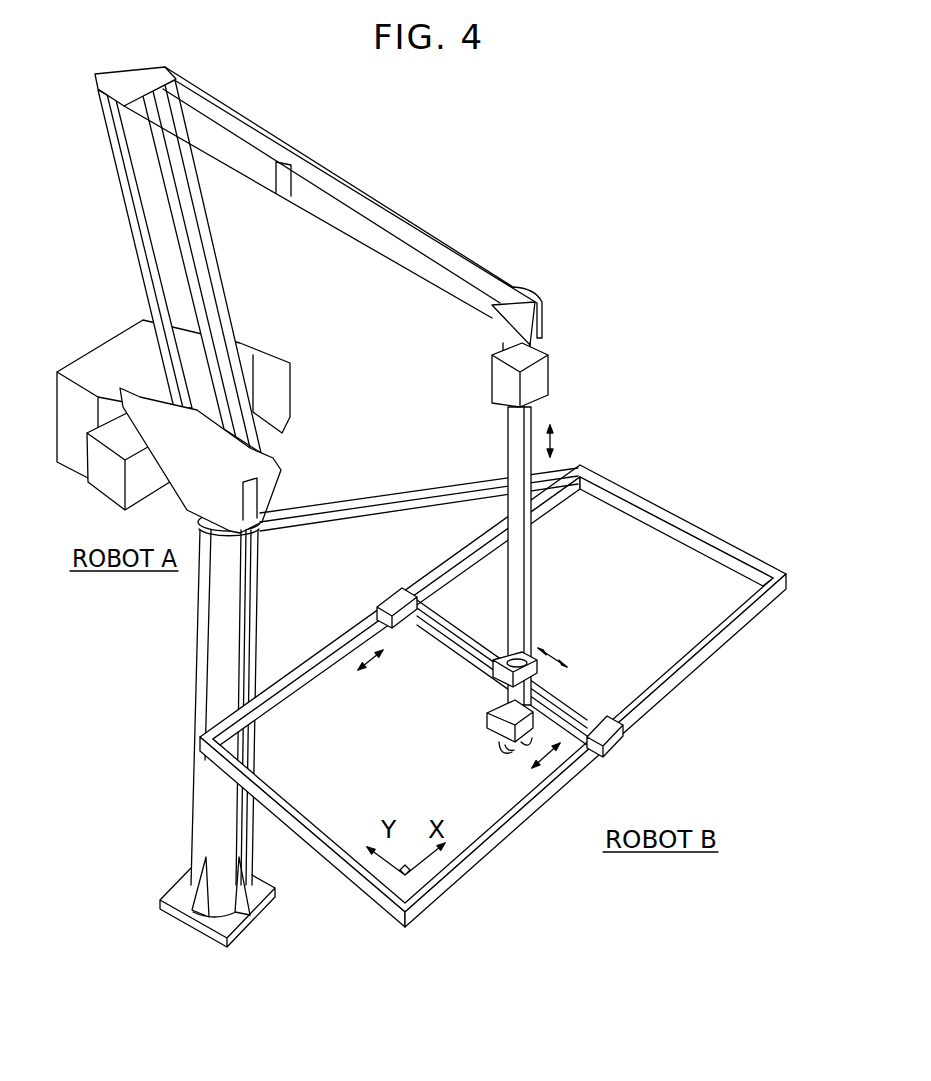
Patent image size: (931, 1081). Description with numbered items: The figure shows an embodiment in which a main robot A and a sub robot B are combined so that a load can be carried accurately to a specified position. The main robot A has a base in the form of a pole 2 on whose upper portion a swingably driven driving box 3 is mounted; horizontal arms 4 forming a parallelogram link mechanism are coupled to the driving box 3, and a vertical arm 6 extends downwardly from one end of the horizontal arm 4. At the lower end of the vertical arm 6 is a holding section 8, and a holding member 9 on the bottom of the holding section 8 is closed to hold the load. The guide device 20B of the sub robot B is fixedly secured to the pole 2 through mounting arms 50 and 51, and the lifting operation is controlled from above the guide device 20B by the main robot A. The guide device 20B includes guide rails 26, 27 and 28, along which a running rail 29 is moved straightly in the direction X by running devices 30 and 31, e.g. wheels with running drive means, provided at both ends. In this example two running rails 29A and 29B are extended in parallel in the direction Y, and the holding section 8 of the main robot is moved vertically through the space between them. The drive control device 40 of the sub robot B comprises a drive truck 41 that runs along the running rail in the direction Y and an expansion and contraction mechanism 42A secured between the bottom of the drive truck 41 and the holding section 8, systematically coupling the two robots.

The pole 2 is at (262, 614).
The driving box 3 is at (273, 357).
The horizontal arm 4 is at (213, 278).
The vertical arm 6 is at (413, 221).
The holding section 8 is at (472, 748).
The holding member 9 is at (507, 750).
The guide device 20B is at (493, 689).
The guide rail 26 is at (288, 693).
The frame rail 27 is at (288, 800).
The guide rail 28 is at (522, 817).
The running rail 29 is at (643, 502).
The running rail 29A is at (425, 640).
The running rail 29B is at (460, 630).
The running device 30 is at (395, 598).
The running device 31 is at (610, 747).
The drive control device 40 is at (555, 524).
The drive truck 41 is at (537, 670).
The expansion and contraction mechanism 42A is at (503, 696).
The mounting arm 50 is at (400, 497).
The mounting arm 51 is at (208, 643).